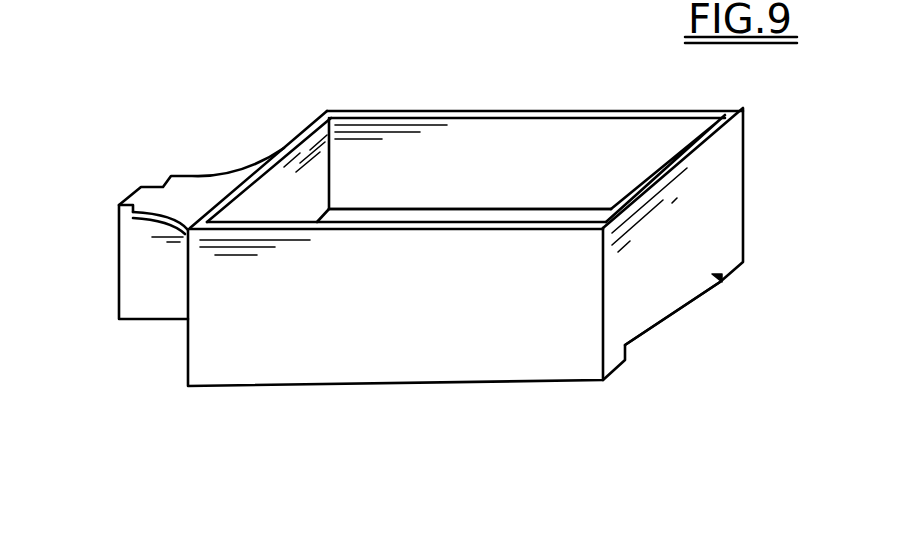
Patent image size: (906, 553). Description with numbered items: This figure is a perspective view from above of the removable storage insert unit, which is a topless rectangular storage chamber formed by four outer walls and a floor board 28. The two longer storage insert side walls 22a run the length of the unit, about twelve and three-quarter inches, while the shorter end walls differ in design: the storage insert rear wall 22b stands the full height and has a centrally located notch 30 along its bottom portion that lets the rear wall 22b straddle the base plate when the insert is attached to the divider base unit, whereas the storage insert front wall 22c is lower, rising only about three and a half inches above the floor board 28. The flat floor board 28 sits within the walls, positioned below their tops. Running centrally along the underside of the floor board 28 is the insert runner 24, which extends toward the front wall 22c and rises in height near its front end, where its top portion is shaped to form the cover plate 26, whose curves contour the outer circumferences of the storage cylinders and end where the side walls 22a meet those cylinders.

The storage insert side wall 22a is at (435, 228).
The storage insert rear wall 22b is at (713, 185).
The storage insert front wall 22c is at (308, 167).
The insert runner 24 is at (155, 273).
The cover plate 26 is at (215, 187).
The floor board 28 is at (345, 215).
The notch 30 is at (662, 318).